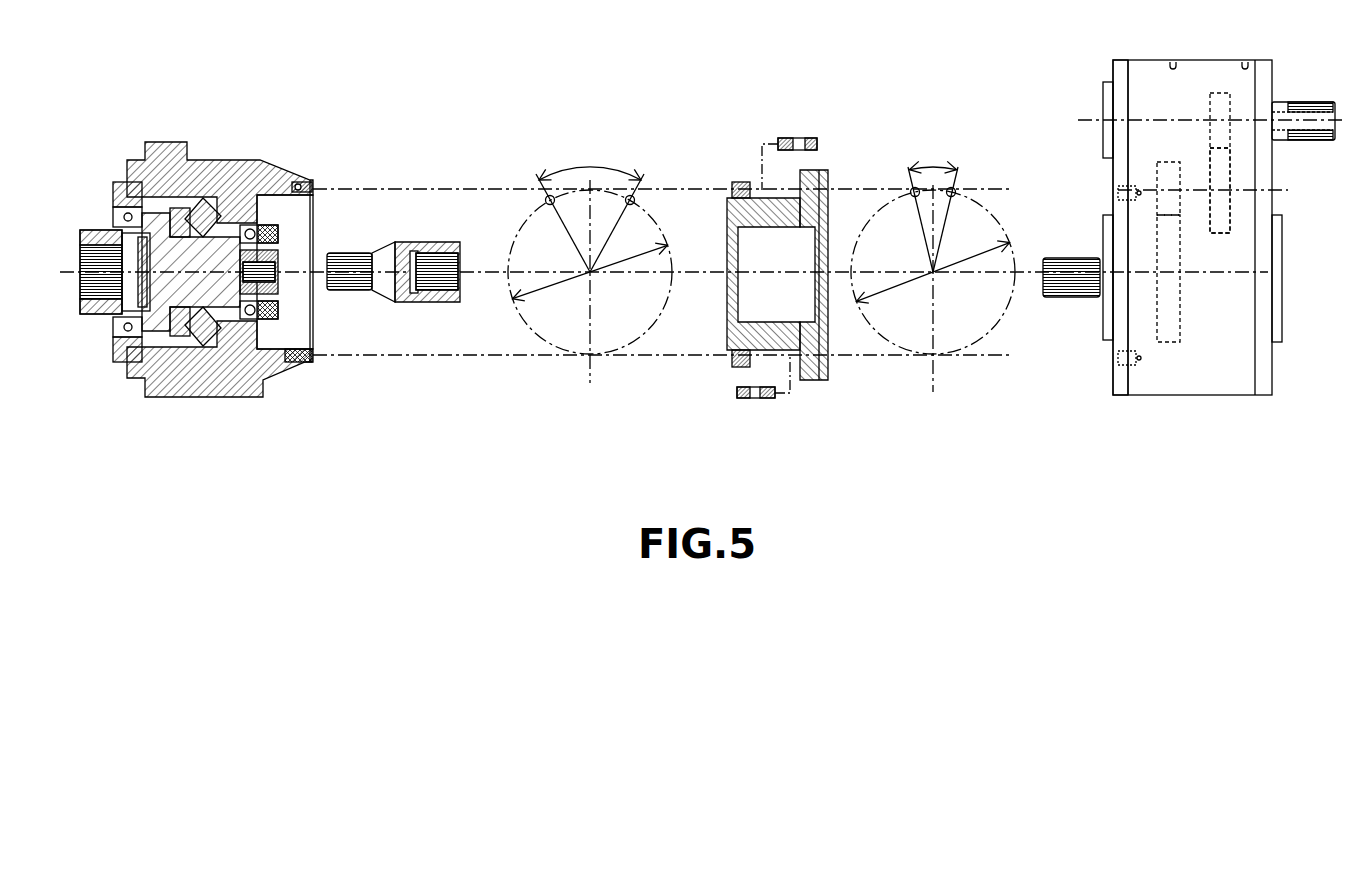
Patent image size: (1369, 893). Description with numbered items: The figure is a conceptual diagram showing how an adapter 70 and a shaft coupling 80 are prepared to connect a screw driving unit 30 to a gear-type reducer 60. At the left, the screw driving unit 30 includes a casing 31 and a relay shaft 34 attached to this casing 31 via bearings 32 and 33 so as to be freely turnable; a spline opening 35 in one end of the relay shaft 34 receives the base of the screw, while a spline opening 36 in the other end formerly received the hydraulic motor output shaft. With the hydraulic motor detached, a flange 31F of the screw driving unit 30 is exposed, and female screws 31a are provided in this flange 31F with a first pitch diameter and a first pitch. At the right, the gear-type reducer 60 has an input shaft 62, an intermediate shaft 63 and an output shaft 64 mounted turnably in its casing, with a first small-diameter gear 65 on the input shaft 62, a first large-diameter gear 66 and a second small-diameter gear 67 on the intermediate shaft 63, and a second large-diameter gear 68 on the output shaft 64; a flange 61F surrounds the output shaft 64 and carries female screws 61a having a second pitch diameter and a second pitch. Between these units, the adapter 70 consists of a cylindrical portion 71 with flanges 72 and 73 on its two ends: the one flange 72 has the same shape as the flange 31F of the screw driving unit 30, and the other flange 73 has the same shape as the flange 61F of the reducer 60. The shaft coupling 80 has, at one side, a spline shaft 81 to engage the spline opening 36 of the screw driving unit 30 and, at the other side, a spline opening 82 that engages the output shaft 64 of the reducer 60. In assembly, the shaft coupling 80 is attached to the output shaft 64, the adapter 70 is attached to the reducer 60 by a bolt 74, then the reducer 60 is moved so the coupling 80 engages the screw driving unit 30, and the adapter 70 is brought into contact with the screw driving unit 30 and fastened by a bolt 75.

The screw driving unit 30 is at (366, 331).
The casing 31 is at (203, 367).
The female screws 31a is at (307, 181).
The flange 31F is at (318, 192).
The bearing 32 is at (128, 373).
The bearing 33 is at (251, 318).
The relay shaft 34 is at (118, 205).
The spline opening 35 is at (78, 278).
The spline opening 36 is at (257, 276).
The shaft coupling 80 is at (410, 237).
The spline shaft 81 is at (355, 276).
The spline opening 82 is at (461, 266).
The adapter 70 is at (866, 307).
The cylindrical portion 71 is at (775, 215).
The flange 72 is at (741, 182).
The flange 73 is at (818, 171).
The bolt 74 is at (753, 400).
The bolt 75 is at (798, 138).
The gear-type reducer 60 is at (1194, 296).
The flange 61F is at (1113, 350).
The female screws 61a is at (1122, 366).
The input shaft 62 is at (1303, 132).
The intermediate shaft 63 is at (1283, 192).
The output shaft 64 is at (1060, 258).
The first small-diameter gear 65 is at (1210, 118).
The first large-diameter gear 66 is at (1210, 177).
The second small-diameter gear 67 is at (1180, 200).
The second large-diameter gear 68 is at (1180, 320).